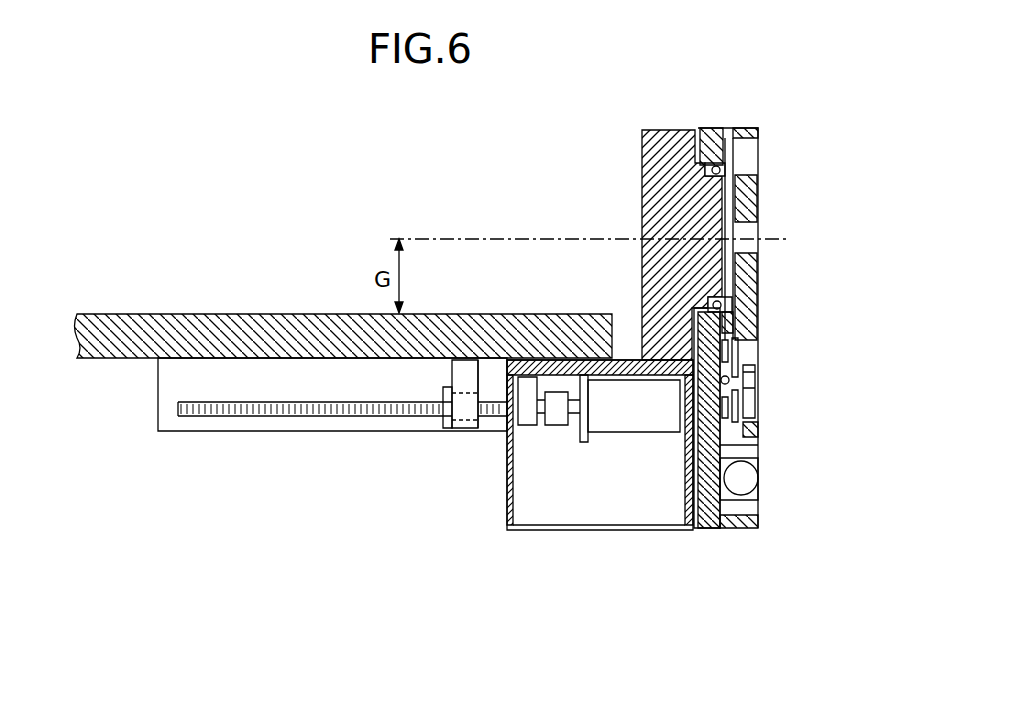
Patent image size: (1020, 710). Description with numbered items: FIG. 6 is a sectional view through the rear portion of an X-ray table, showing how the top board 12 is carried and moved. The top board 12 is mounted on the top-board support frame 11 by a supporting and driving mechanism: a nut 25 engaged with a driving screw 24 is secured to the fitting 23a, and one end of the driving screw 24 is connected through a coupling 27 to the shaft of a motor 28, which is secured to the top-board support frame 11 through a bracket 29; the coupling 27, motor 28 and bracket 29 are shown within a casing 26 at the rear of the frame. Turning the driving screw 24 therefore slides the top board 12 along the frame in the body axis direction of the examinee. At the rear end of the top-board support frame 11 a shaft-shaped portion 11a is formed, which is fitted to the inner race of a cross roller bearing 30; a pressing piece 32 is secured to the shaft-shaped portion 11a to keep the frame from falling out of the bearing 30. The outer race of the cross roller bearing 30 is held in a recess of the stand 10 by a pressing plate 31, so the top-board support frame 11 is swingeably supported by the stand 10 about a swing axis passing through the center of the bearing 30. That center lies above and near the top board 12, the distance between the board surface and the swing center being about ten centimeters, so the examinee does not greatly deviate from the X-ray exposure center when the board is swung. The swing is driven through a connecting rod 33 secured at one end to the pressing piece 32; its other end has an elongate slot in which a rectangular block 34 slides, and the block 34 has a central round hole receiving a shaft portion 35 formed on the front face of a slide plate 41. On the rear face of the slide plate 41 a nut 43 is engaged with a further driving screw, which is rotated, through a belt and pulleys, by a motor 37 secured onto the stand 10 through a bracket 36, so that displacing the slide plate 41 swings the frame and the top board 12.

The stand 10 is at (705, 530).
The top-board support frame 11 is at (158, 402).
The shaft-shaped portion 11a is at (712, 220).
The top board 12 is at (113, 314).
The fitting 23a is at (463, 360).
The driving screw 24 is at (241, 402).
The nut 25 is at (447, 426).
The casing 26 is at (522, 430).
The coupling 27 is at (557, 377).
The motor 28 is at (618, 428).
The bracket 29 is at (587, 442).
The cross roller bearing 30 is at (717, 128).
The pressing plate 31 is at (733, 143).
The pressing piece 32 is at (735, 198).
The connecting rod 33 is at (757, 168).
The rectangular block 34 is at (745, 364).
The shaft portion 35 is at (748, 388).
The bracket 36 is at (740, 517).
The motor 37 is at (756, 483).
The slide plate 41 is at (742, 435).
The nut 43 is at (735, 352).